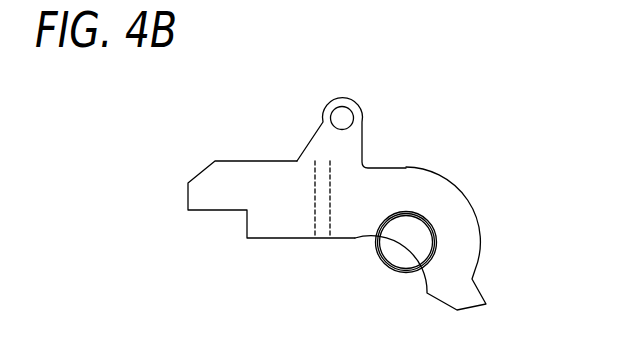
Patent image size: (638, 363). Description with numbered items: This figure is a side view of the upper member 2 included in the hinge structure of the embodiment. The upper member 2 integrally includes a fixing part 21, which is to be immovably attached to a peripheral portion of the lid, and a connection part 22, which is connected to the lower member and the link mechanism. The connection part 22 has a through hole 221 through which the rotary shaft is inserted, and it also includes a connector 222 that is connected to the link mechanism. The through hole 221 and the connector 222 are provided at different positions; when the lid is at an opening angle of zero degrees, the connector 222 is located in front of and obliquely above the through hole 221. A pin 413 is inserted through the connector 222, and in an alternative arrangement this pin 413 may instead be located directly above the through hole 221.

The upper member 2 is at (365, 183).
The fixing part 21 is at (218, 197).
The connection part 22 is at (398, 185).
The through hole 221 is at (413, 237).
The connector 222 is at (325, 137).
The pin 413 is at (346, 116).